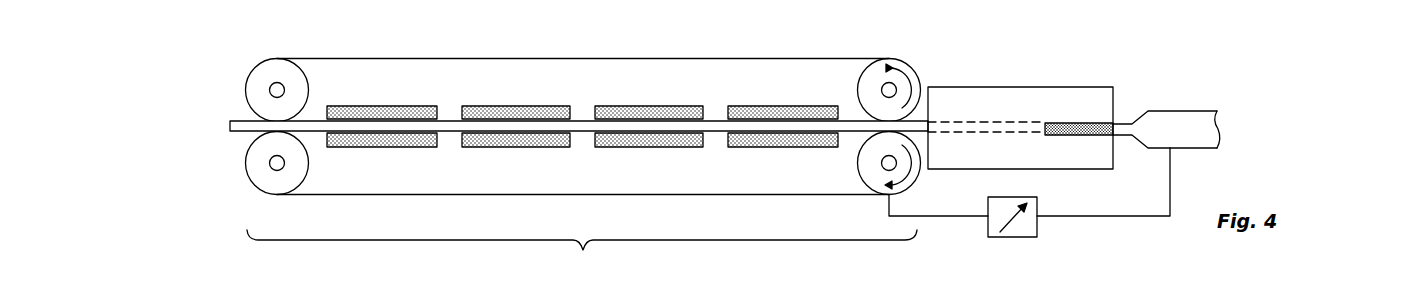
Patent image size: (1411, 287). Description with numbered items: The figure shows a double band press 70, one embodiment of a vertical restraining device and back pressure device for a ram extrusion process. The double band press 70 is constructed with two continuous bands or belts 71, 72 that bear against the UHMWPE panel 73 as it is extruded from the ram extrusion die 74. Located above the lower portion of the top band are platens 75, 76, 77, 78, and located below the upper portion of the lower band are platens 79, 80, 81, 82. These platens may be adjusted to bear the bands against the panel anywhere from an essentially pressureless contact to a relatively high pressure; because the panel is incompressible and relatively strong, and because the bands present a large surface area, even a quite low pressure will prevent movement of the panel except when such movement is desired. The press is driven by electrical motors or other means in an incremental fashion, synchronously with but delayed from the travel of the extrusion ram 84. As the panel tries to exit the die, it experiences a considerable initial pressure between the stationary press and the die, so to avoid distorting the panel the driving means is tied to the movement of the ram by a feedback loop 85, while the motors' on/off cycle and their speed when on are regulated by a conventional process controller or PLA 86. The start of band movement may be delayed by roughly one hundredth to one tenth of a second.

The double band press 70 is at (582, 253).
The continuous band 71 is at (713, 58).
The continuous band 72 is at (323, 195).
The UHMWPE panel 73 is at (230, 126).
The ram extrusion die 74 is at (1021, 88).
The platen 75 is at (383, 106).
The platen 76 is at (510, 106).
The platen 77 is at (663, 106).
The platen 78 is at (790, 106).
The platen 79 is at (383, 147).
The platen 80 is at (510, 147).
The platen 81 is at (662, 147).
The platen 82 is at (790, 147).
The extrusion ram 84 is at (1172, 117).
The feedback loop 85 is at (1100, 217).
The process controller 86 is at (1013, 237).